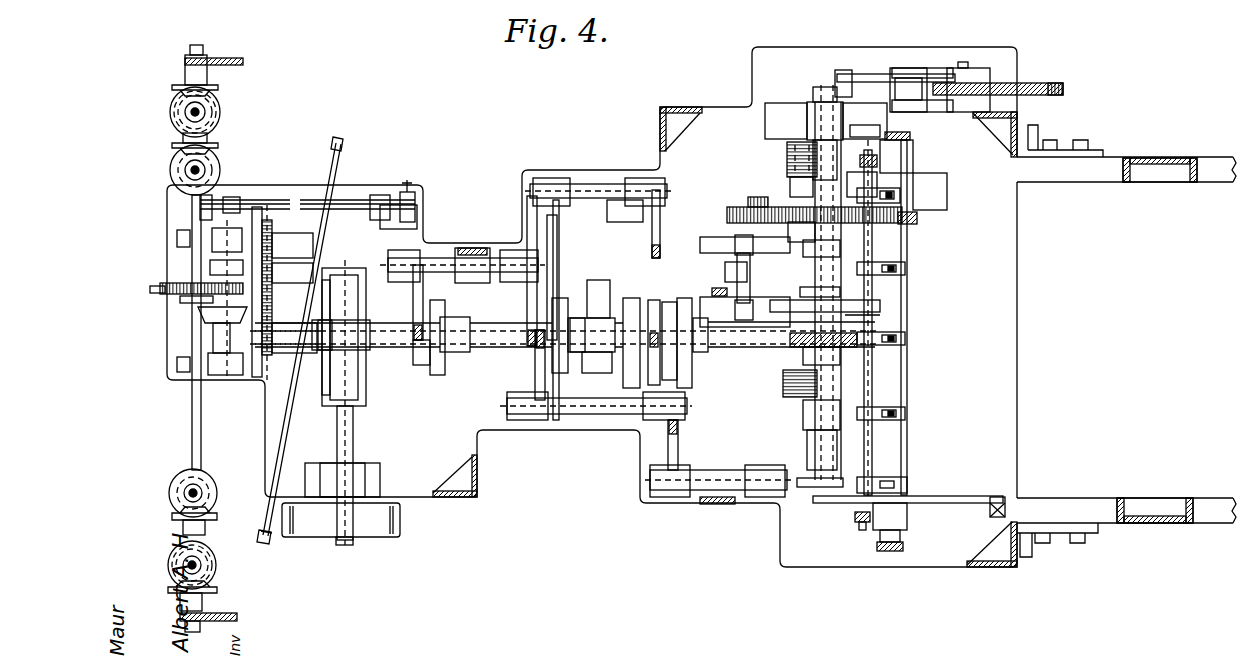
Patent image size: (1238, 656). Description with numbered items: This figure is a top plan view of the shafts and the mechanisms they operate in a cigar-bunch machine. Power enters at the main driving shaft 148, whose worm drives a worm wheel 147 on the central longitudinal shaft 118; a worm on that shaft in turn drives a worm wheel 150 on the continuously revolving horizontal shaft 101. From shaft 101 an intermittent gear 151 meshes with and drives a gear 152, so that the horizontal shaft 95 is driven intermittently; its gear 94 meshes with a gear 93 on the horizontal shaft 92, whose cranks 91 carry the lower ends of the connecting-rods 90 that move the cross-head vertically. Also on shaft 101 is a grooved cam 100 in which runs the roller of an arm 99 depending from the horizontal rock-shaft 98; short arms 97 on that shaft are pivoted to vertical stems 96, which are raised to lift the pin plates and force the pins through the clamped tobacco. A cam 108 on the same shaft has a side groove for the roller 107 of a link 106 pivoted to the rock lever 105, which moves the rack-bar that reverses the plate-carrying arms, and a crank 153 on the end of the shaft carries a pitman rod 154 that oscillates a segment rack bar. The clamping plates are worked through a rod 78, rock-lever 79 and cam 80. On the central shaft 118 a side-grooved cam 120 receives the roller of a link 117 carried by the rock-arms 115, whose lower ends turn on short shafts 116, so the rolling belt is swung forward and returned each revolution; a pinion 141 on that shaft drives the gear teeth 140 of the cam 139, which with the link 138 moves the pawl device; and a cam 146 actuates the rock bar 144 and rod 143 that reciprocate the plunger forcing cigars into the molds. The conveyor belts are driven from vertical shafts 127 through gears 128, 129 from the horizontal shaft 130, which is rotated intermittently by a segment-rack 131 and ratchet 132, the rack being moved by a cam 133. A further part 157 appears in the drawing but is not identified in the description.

The rod 78 is at (990, 512).
The rock-lever 79 is at (952, 496).
The cam 80 is at (805, 487).
The connecting-rods 90 is at (912, 133).
The cranks 91 is at (915, 158).
The horizontal shaft 92 is at (905, 252).
The gear 93 is at (918, 220).
The gear 94 is at (727, 215).
The horizontal shaft 95 is at (790, 179).
The stems 96 is at (905, 268).
The short arms 97 is at (882, 404).
The horizontal rock-shaft 98 is at (875, 294).
The arm 99 is at (878, 316).
The cam 100 is at (880, 310).
The continuously-revolving horizontal shaft 101 is at (830, 168).
The rock lever 105 is at (712, 290).
The link 106 is at (725, 270).
The roller 107 is at (745, 268).
The cam 108 is at (765, 260).
The rock-arms 115 is at (650, 236).
The short shafts 116 is at (470, 257).
The link 117 is at (420, 372).
The central longitudinal shaft 118 is at (485, 336).
The cam 120 is at (440, 376).
The vertical shafts 127 is at (198, 112).
The gears 128 is at (216, 124).
The gears 129 is at (212, 90).
The horizontal shaft 130 is at (199, 410).
The segment-rack 131 is at (170, 290).
The ratchet 132 is at (165, 283).
The cam 133 is at (160, 288).
The link 138 is at (272, 288).
The cam 139 is at (272, 308).
The gear teeth 140 is at (270, 238).
The pinion 141 is at (258, 370).
The rod 143 is at (272, 540).
The rock bar 144 is at (325, 240).
The cam 146 is at (320, 394).
The worm wheel 147 is at (346, 400).
The main driving shaft 148 is at (346, 446).
The worm wheel 150 is at (790, 342).
The intermittent gear 151 is at (786, 200).
The gear 152 is at (750, 200).
The crank 153 is at (812, 90).
The pitman rod 154 is at (867, 74).
The screw 157 is at (1043, 83).